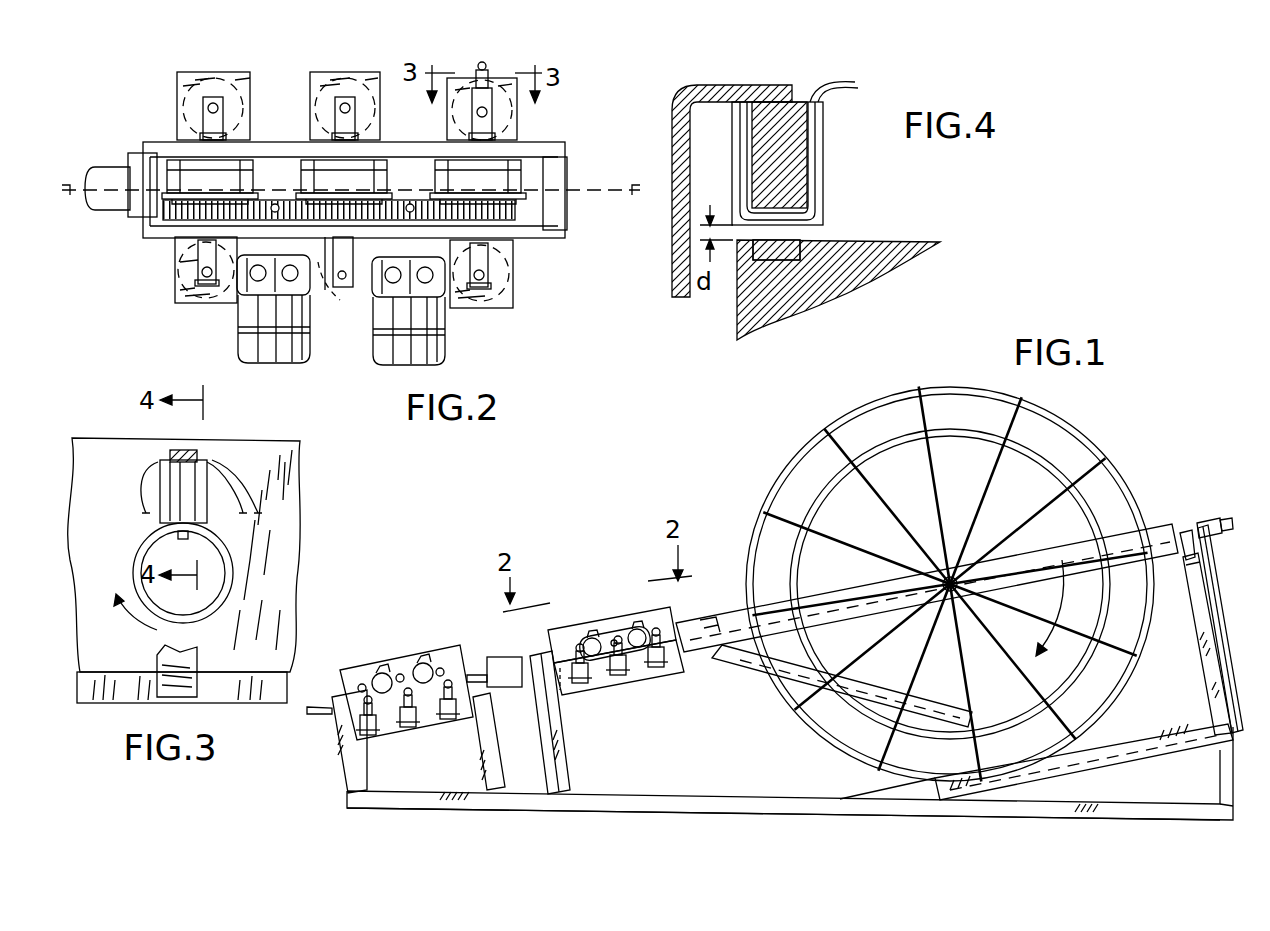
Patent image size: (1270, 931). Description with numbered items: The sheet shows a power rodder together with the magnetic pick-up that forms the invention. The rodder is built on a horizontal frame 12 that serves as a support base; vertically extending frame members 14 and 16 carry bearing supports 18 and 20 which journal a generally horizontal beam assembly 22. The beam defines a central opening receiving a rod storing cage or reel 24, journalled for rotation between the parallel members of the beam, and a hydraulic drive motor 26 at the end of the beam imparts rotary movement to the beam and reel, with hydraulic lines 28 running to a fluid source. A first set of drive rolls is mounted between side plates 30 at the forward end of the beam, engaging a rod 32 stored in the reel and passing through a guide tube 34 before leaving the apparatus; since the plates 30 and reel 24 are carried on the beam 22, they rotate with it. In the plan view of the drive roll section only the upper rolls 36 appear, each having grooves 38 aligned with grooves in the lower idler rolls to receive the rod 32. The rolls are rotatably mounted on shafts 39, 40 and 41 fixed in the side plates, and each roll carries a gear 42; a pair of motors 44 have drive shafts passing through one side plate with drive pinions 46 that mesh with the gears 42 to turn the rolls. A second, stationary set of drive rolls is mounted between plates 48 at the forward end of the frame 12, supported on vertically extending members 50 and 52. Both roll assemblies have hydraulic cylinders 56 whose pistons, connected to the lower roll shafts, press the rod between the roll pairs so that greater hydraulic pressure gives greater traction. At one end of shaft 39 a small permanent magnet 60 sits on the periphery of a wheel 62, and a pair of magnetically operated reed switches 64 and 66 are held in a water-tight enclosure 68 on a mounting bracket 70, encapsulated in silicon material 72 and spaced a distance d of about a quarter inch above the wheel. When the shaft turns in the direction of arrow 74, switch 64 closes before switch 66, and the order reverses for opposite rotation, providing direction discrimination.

In FIG. 1, the horizontal frame 12 is at (778, 810).
In FIG. 1, the vertically extending frame member 14 is at (557, 763).
In FIG. 1, the vertically extending frame member 16 is at (1208, 660).
In FIG. 1, the bearing support 18 is at (525, 655).
In FIG. 1, the bearing support 20 is at (1176, 528).
In FIG. 1, the beam assembly 22 is at (737, 590).
In FIG. 1, the reel 24 is at (895, 392).
In FIG. 1, the hydraulic drive motor 26 is at (1210, 520).
In FIG. 1, the hydraulic lines 28 is at (1220, 596).
In FIG. 2, the side plates 30 is at (548, 152).
In FIG. 1, the side plates 30 is at (658, 610).
In FIG. 2, the rod 32 is at (610, 205).
In FIG. 1, the rod 32 is at (1012, 722).
In FIG. 1, the guide tube 34 is at (800, 668).
In FIG. 2, the upper rolls 36 is at (183, 168).
In FIG. 2, the grooves 38 is at (330, 187).
In FIG. 2, the shaft 39 is at (480, 284).
In FIG. 2, the shaft 40 is at (343, 290).
In FIG. 2, the shaft 41 is at (200, 282).
In FIG. 2, the gear 42 is at (160, 232).
In FIG. 2, the motors 44 is at (258, 345).
In FIG. 2, the drive pinions 46 is at (275, 204).
In FIG. 1, the plates 48 is at (365, 670).
In FIG. 1, the vertically extending member 50 is at (345, 780).
In FIG. 1, the vertically extending member 52 is at (490, 768).
In FIG. 2, the hydraulic cylinders 56 is at (478, 300).
In FIG. 1, the hydraulic cylinders 56 is at (378, 734).
In FIG. 4, the permanent magnet 60 is at (800, 243).
In FIG. 3, the permanent magnet 60 is at (178, 533).
In FIG. 2, the wheel 62 is at (490, 112).
In FIG. 3, the reed switch 64 is at (162, 521).
In FIG. 3, the reed switch 66 is at (245, 526).
In FIG. 2, the enclosure 68 is at (486, 92).
In FIG. 4, the enclosure 68 is at (823, 170).
In FIG. 4, the mounting bracket 70 is at (690, 96).
In FIG. 3, the mounting bracket 70 is at (178, 455).
In FIG. 4, the silicon material 72 is at (790, 187).
In FIG. 3, the arrow 74 is at (140, 622).